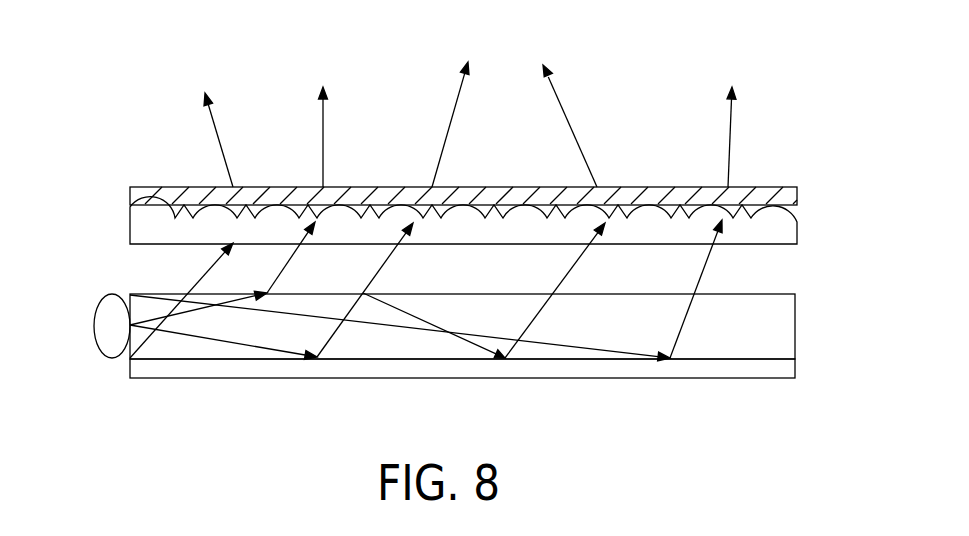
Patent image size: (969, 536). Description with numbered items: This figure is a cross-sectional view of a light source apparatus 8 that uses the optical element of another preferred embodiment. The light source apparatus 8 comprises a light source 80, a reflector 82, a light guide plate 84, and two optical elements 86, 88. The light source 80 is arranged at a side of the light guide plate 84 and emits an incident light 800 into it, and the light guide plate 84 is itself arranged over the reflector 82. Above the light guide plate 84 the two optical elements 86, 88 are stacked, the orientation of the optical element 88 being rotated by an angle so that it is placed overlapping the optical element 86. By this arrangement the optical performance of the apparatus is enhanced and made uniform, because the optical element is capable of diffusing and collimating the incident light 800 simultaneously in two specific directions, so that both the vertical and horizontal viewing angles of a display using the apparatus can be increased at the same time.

The light source apparatus 8 is at (830, 156).
The light source 80 is at (110, 327).
The incident light 800 is at (166, 330).
The reflector 82 is at (790, 368).
The light guide plate 84 is at (783, 330).
The optical element 86 is at (788, 233).
The optical element 88 is at (787, 202).